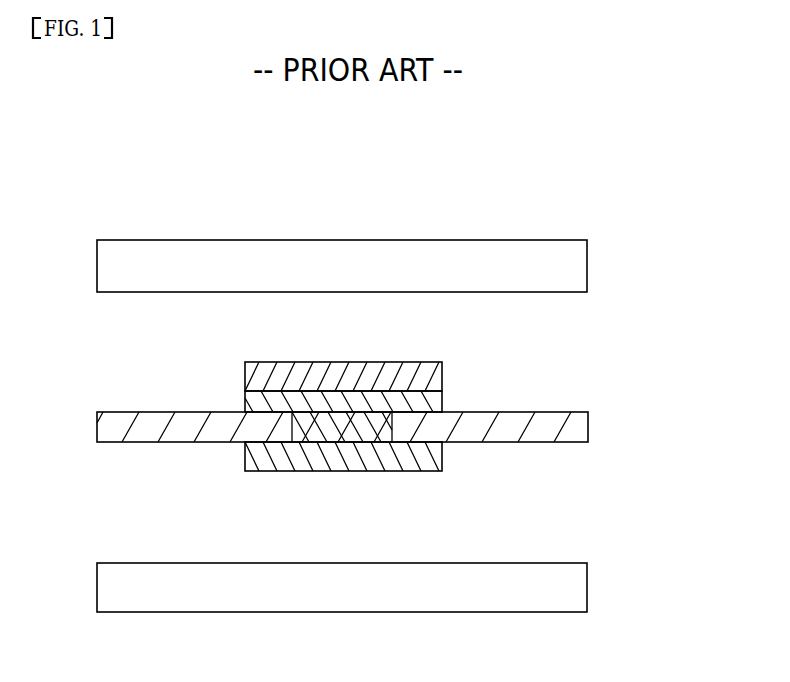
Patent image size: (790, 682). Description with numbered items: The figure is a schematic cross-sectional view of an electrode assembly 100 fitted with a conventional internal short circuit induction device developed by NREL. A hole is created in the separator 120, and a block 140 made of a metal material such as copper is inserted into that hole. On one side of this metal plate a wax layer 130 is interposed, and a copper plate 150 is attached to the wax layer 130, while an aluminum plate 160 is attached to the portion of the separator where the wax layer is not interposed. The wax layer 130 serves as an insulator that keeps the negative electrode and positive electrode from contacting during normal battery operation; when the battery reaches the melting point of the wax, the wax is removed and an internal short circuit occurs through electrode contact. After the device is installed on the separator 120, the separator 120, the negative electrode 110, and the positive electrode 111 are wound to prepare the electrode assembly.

The electrode assembly 100 is at (148, 168).
The negative electrode 110 is at (573, 587).
The positive electrode 111 is at (572, 265).
The separator 120 is at (575, 428).
The wax layer 130 is at (430, 402).
The block 140 is at (447, 448).
The copper plate 150 is at (422, 372).
The aluminum plate 160 is at (340, 460).